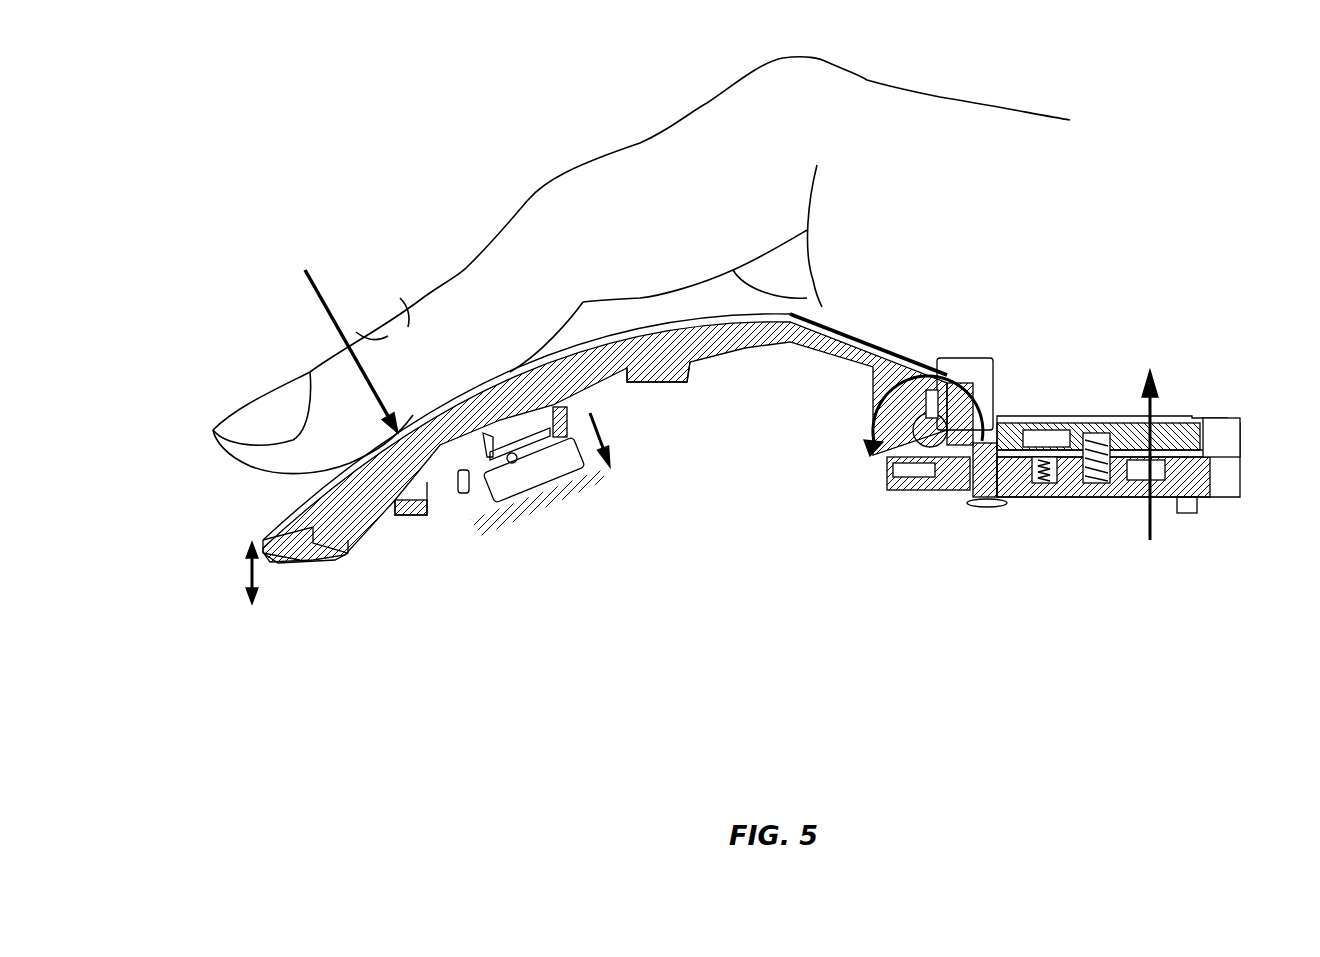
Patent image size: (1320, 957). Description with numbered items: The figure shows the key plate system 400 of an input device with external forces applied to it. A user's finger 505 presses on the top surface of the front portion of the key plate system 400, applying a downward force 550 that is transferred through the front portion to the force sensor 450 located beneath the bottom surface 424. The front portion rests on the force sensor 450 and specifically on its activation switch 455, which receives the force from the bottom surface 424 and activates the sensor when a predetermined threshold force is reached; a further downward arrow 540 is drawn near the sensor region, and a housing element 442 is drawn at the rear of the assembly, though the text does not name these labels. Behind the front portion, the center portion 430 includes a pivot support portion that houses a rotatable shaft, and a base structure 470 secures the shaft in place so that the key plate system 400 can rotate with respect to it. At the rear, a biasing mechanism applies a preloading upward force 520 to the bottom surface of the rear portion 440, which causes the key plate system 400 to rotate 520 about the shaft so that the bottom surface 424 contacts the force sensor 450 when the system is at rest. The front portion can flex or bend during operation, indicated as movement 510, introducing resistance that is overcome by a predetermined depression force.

The key plate system 400 is at (425, 683).
The bottom surface 424 is at (730, 358).
The center portion 430 is at (957, 358).
The rear portion 440 is at (1107, 425).
The housing 442 is at (1160, 458).
The force sensor 450 is at (537, 480).
The activation switch 455 is at (507, 463).
The base structure 470 is at (887, 470).
The user's finger 505 is at (641, 265).
The movement 510 is at (243, 572).
The upward force 520 is at (868, 438).
The downward force arrow 540 is at (600, 427).
The downward force 550 is at (320, 295).